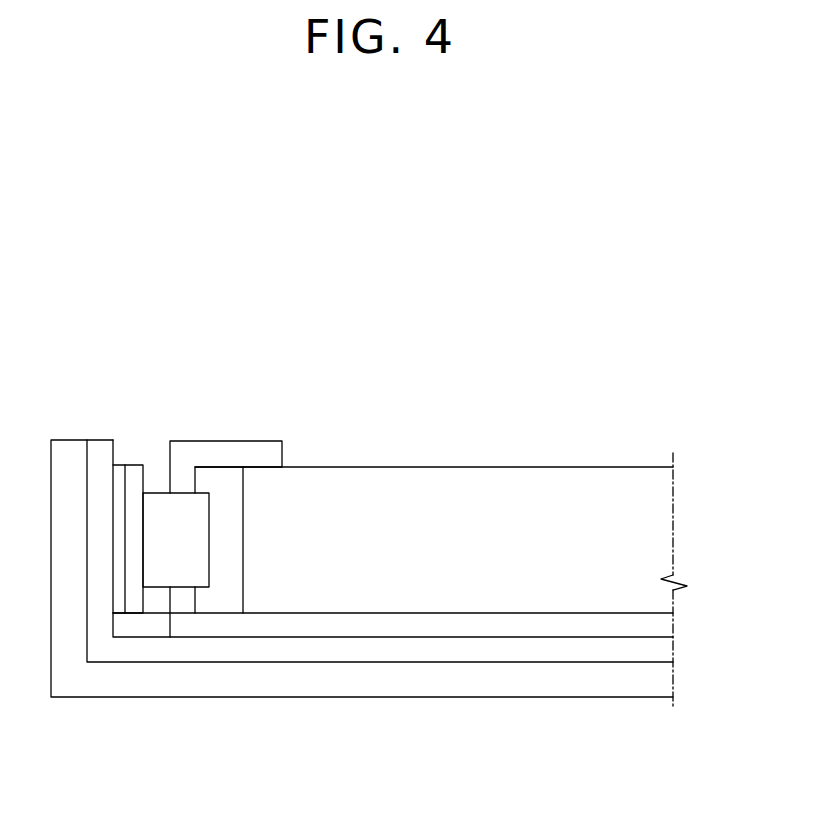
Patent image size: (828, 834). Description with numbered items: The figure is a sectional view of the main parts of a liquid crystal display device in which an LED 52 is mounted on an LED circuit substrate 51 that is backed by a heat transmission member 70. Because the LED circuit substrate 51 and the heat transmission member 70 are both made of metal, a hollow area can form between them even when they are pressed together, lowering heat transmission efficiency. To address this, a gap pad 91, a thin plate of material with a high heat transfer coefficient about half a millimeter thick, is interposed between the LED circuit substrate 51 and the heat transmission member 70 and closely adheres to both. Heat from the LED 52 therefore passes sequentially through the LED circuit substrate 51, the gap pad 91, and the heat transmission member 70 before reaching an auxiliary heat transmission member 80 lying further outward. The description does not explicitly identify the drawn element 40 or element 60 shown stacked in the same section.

The display panel 40 is at (422, 483).
The LED circuit substrate 51 is at (132, 608).
The LED 52 is at (183, 580).
The first layer 60 is at (423, 632).
The heat transmission member 70 is at (262, 652).
The auxiliary heat transmission member 80 is at (365, 688).
The gap pad 91 is at (122, 466).